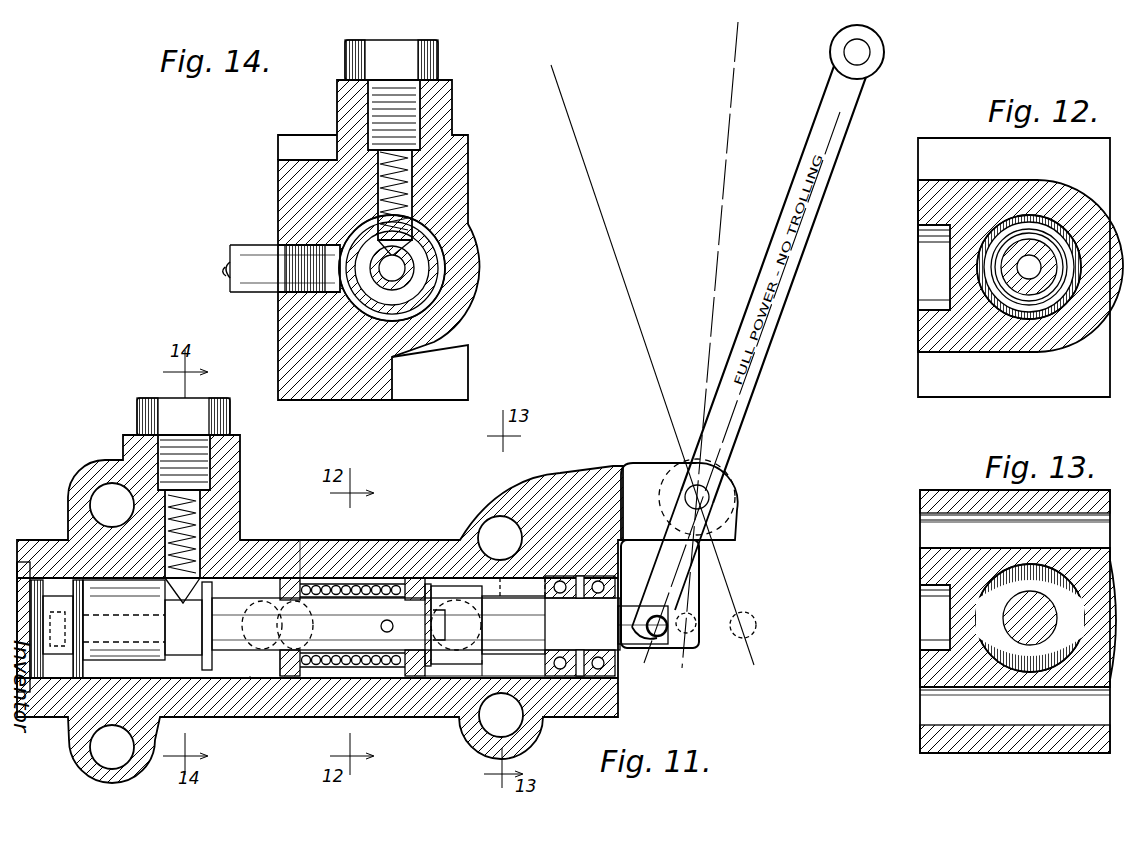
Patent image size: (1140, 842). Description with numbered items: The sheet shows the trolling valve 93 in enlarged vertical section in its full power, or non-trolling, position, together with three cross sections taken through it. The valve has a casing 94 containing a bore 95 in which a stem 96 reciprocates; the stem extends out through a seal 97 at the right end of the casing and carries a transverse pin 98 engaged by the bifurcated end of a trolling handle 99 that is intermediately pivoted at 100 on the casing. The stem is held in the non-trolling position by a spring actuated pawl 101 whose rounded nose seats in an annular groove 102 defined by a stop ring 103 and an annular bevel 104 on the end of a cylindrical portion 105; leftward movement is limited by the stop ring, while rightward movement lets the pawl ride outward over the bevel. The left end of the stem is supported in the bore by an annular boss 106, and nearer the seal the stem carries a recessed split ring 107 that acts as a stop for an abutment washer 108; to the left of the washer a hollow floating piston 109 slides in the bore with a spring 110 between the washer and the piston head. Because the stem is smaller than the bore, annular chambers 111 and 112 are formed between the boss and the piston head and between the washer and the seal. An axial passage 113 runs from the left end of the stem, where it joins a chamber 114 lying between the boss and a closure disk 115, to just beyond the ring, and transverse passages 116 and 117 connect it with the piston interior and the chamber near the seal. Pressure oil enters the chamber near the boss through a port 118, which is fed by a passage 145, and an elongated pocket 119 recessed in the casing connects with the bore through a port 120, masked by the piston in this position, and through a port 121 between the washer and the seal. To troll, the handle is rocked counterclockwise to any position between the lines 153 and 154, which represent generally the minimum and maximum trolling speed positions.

In FIG. 11, the trolling valve 93 is at (288, 455).
In FIG. 11, the casing 94 is at (292, 524).
In FIG. 14, the casing 94 is at (278, 180).
In FIG. 12, the casing 94 is at (928, 362).
In FIG. 13, the casing 94 is at (923, 568).
In FIG. 11, the bore 95 is at (440, 680).
In FIG. 14, the bore 95 is at (440, 303).
In FIG. 12, the bore 95 is at (1050, 216).
In FIG. 13, the bore 95 is at (1003, 656).
In FIG. 11, the stem 96 is at (590, 622).
In FIG. 14, the stem 96 is at (430, 262).
In FIG. 12, the stem 96 is at (1024, 250).
In FIG. 13, the stem 96 is at (933, 690).
In FIG. 11, the seal 97 is at (650, 648).
In FIG. 13, the seal 97 is at (1036, 668).
In FIG. 11, the transverse pin 98 is at (676, 645).
In FIG. 11, the trolling handle 99 is at (722, 552).
In FIG. 11, the pivot 100 is at (708, 497).
In FIG. 11, the spring actuated pawl 101 is at (237, 505).
In FIG. 14, the spring actuated pawl 101 is at (437, 238).
In FIG. 11, the annular groove 102 is at (183, 603).
In FIG. 11, the stop ring 103 is at (214, 668).
In FIG. 14, the stop ring 103 is at (440, 254).
In FIG. 11, the annular bevel 104 is at (140, 611).
In FIG. 11, the cylindrical portion 105 is at (138, 637).
In FIG. 11, the annular boss 106 is at (54, 629).
In FIG. 11, the split ring 107 is at (441, 578).
In FIG. 11, the abutment washer 108 is at (428, 578).
In FIG. 11, the floating piston 109 is at (270, 665).
In FIG. 11, the spring 110 is at (285, 665).
In FIG. 12, the spring 110 is at (1040, 306).
In FIG. 11, the annular chamber 111 is at (140, 675).
In FIG. 11, the annular chamber 112 is at (478, 675).
In FIG. 11, the axial passage 113 is at (62, 655).
In FIG. 14, the axial passage 113 is at (395, 283).
In FIG. 11, the chamber 114 is at (38, 692).
In FIG. 11, the closure disk 115 is at (17, 562).
In FIG. 11, the transverse passage 116 is at (381, 627).
In FIG. 11, the transverse passage 117 is at (466, 625).
In FIG. 11, the inlet port 118 is at (322, 526).
In FIG. 14, the inlet port 118 is at (288, 250).
In FIG. 11, the elongated pocket 119 is at (473, 573).
In FIG. 12, the elongated pocket 119 is at (927, 303).
In FIG. 13, the elongated pocket 119 is at (925, 644).
In FIG. 11, the port 120 is at (304, 607).
In FIG. 12, the port 120 is at (950, 293).
In FIG. 11, the port 121 is at (517, 616).
In FIG. 13, the port 121 is at (947, 604).
In FIG. 14, the passage 145 is at (228, 292).
In FIG. 11, the minimum trolling speed line 153 is at (580, 152).
In FIG. 11, the maximum trolling speed line 154 is at (720, 190).